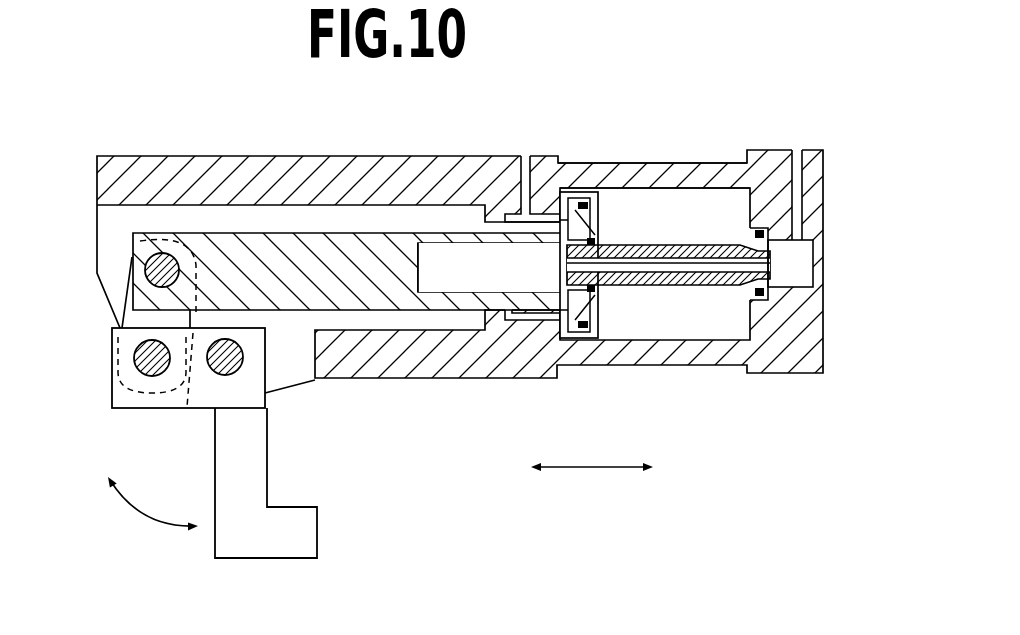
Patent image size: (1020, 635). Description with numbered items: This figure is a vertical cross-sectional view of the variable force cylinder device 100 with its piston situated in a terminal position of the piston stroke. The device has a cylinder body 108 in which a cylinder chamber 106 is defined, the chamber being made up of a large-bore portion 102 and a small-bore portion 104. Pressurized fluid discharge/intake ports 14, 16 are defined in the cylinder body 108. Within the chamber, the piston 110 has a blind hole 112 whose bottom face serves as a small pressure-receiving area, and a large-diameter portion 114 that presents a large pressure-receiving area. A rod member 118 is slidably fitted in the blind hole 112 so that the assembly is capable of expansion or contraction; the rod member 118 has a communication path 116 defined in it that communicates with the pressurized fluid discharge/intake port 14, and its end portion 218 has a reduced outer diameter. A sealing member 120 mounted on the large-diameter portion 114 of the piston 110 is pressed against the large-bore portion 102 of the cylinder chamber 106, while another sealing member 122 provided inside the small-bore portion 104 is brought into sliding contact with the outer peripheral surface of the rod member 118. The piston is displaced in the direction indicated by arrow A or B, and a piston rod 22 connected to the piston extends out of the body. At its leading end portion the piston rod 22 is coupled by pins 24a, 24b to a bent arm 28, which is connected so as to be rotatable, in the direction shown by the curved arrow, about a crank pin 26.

The variable force cylinder device 100 is at (688, 80).
The cylinder body 108 is at (374, 146).
The pressurized fluid discharge/intake port 16 is at (523, 157).
The piston 110 is at (530, 324).
The piston rod 22 is at (253, 245).
The blind hole 112 is at (438, 275).
The pin 24a is at (162, 253).
The pin 24b is at (148, 373).
The crank pin 26 is at (233, 362).
The bent arm 28 is at (258, 482).
The large-bore portion 102 is at (612, 195).
The cylinder chamber 106 is at (683, 208).
The rod member 118 is at (638, 243).
The sealing member 120 is at (581, 200).
The large-diameter portion 114 is at (596, 340).
The communication path 116 is at (653, 265).
The sealing member 122 is at (758, 229).
The end portion 218 is at (753, 300).
The pressurized fluid discharge/intake port 14 is at (796, 150).
The small-bore portion 104 is at (787, 268).